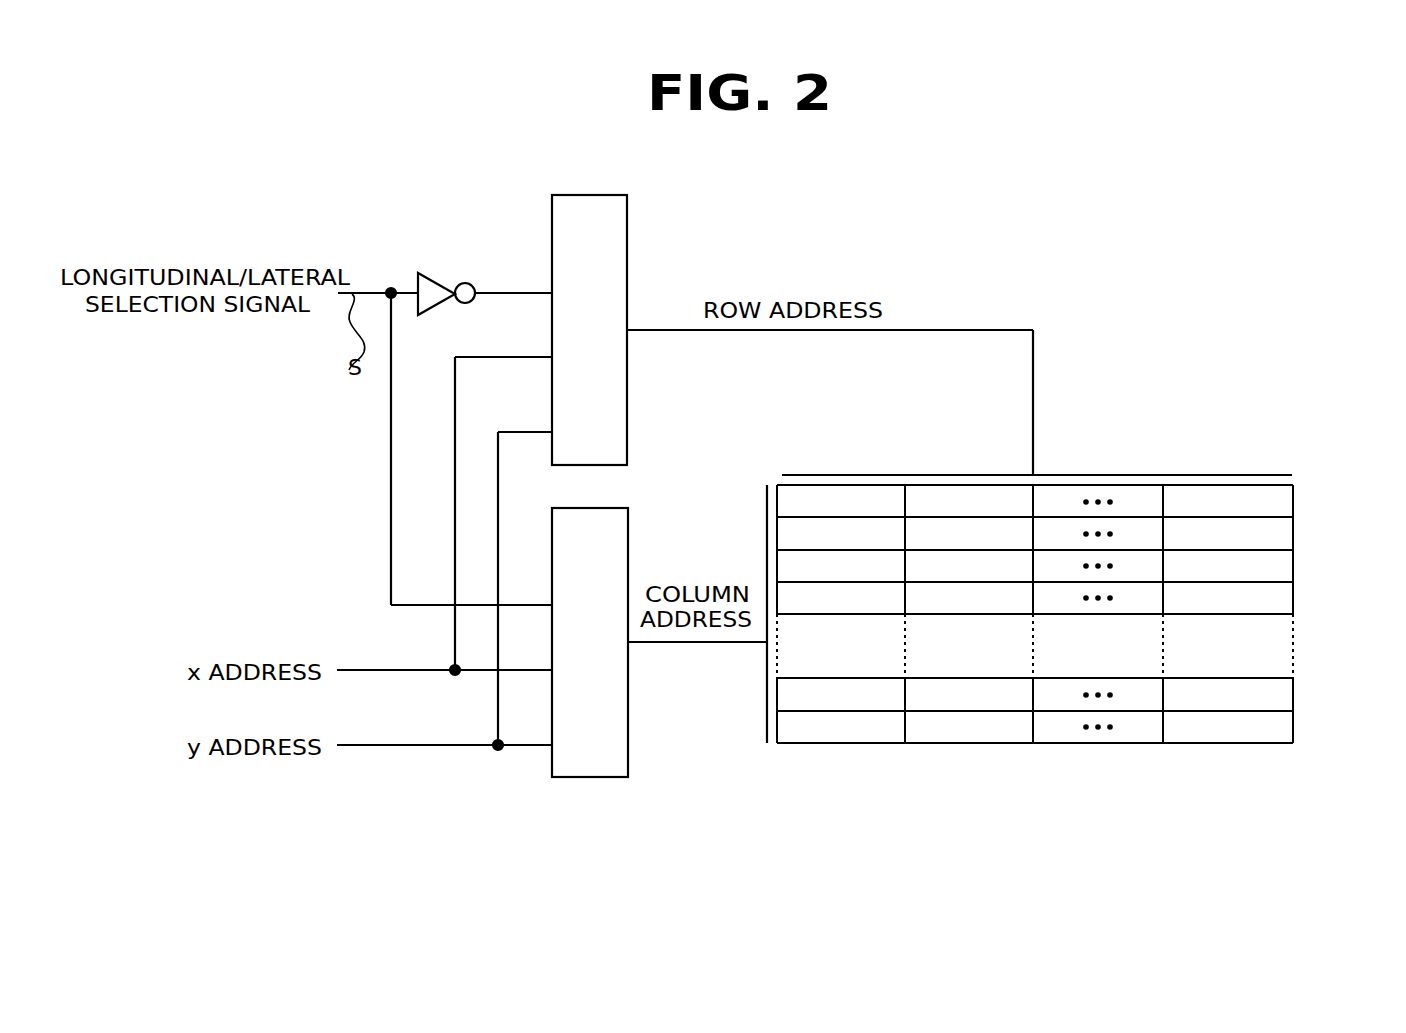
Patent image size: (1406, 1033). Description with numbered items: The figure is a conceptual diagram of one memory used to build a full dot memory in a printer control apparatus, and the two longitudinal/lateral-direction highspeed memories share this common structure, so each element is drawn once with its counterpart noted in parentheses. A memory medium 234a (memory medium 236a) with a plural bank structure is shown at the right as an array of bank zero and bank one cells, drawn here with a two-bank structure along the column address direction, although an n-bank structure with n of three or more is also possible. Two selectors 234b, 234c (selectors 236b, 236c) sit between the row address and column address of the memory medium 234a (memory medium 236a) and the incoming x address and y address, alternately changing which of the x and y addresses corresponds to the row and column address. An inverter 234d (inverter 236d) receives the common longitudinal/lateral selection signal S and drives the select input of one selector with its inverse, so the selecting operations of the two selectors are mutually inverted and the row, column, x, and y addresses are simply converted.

The memory medium 234a is at (1298, 503).
The selector 234b is at (605, 256).
The selector 234c is at (600, 760).
The inverter 234d is at (437, 274).
The memory medium 236a is at (1087, 560).
The selector 236b is at (696, 330).
The selector 236c is at (672, 671).
The inverter 236d is at (459, 262).